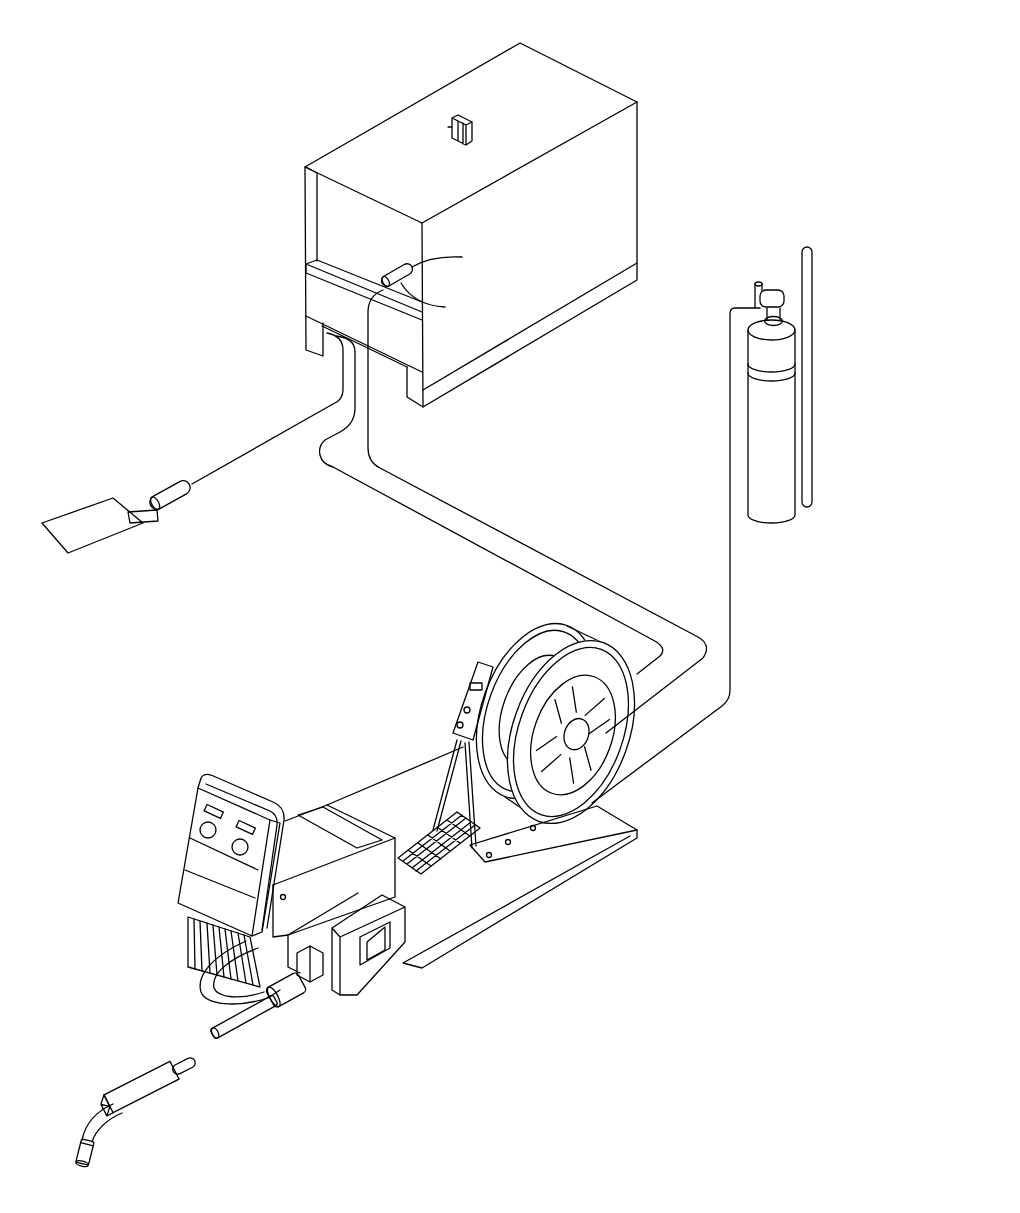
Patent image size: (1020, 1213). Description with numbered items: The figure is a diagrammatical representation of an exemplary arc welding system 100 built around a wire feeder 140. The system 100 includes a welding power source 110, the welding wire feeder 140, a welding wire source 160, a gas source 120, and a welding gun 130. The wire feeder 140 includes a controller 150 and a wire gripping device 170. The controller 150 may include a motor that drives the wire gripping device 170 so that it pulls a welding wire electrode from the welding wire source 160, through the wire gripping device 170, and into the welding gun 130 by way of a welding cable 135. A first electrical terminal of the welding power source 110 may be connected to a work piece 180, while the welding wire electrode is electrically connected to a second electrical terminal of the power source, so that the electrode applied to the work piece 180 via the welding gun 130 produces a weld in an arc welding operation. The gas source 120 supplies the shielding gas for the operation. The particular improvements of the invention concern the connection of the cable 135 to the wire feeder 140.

The arc welding system 100 is at (158, 98).
The welding power source 110 is at (592, 77).
The gas source 120 is at (836, 228).
The welding gun 130 is at (148, 1088).
The welding cable 135 is at (261, 1007).
The wire feeder 140 is at (258, 740).
The controller 150 is at (300, 806).
The welding wire source 160 is at (548, 598).
The wire gripping device 170 is at (373, 966).
The work piece 180 is at (81, 508).